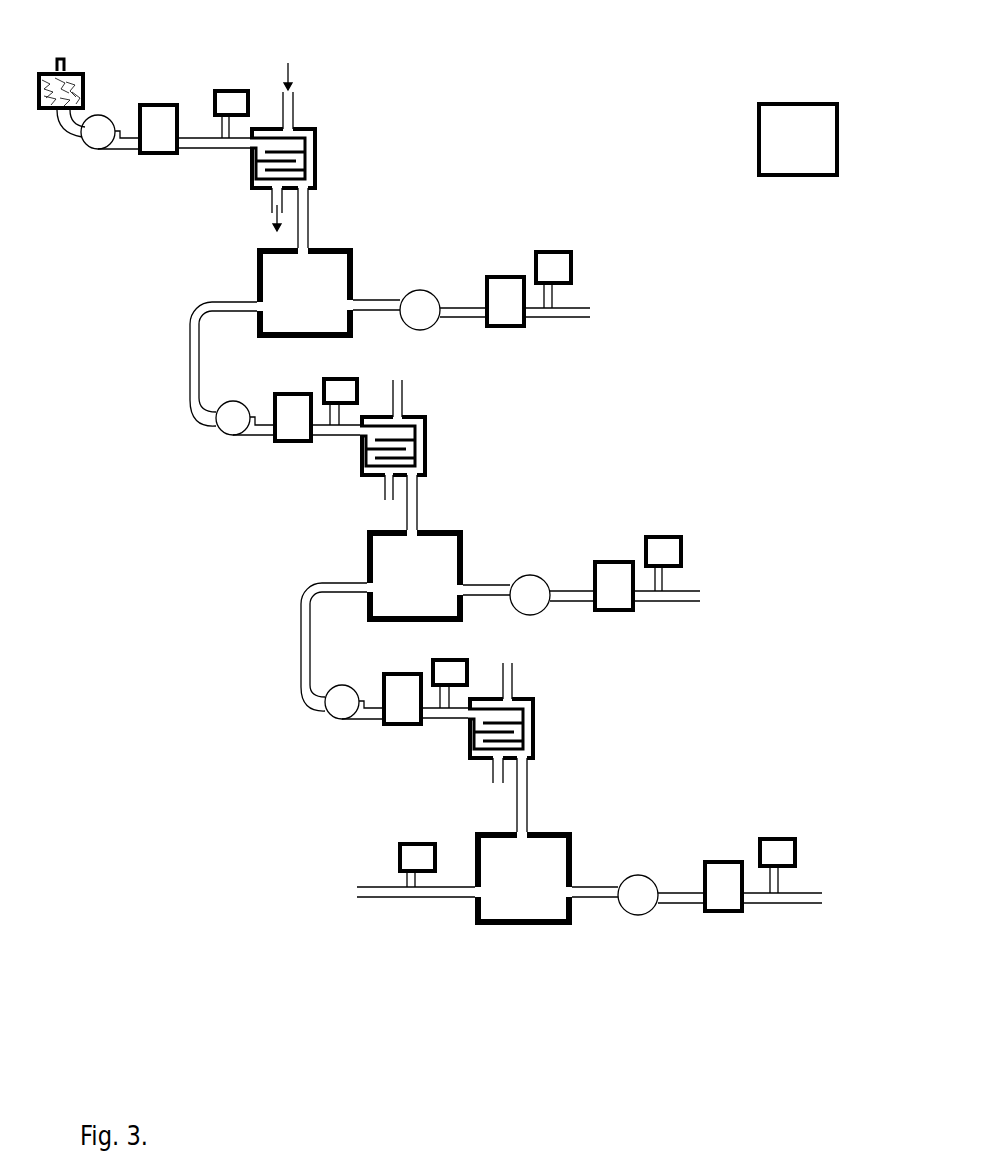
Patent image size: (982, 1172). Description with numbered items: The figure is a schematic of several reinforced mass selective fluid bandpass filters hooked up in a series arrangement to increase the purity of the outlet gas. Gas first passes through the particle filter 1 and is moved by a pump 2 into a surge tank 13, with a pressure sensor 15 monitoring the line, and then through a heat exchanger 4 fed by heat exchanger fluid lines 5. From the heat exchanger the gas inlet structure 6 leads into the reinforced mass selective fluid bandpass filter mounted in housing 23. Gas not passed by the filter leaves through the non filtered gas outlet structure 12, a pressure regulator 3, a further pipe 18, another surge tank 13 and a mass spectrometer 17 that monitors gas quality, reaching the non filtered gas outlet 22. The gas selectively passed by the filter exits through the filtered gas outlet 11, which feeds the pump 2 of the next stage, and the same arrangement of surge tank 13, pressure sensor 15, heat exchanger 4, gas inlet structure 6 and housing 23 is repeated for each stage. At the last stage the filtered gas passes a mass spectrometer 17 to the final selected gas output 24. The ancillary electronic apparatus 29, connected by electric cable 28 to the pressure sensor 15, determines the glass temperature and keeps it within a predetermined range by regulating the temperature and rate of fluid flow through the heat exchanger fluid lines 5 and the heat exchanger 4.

The particle filter 1 is at (70, 72).
The pump 2 is at (103, 115).
The pressure regulator 3 is at (420, 290).
The heat exchanger 4 is at (317, 155).
The heat exchanger fluid lines 5 is at (297, 108).
The gas inlet structure 6 is at (308, 217).
The filtered gas outlet 11 is at (190, 342).
The non filtered gas outlet structure 12 is at (377, 300).
The surge tank 13 is at (158, 103).
The pressure sensor 15 is at (222, 89).
The mass spectrometer 17 is at (563, 250).
The pipe 18 is at (200, 150).
The non filtered gas outlet 22 is at (590, 313).
The reinforced mass selective fluid bandpass filter mounted in housing 23 is at (257, 264).
The final selected gas output 24 is at (357, 891).
The electric cable 28 is at (243, 88).
The ancillary electronic apparatus 29 is at (840, 140).